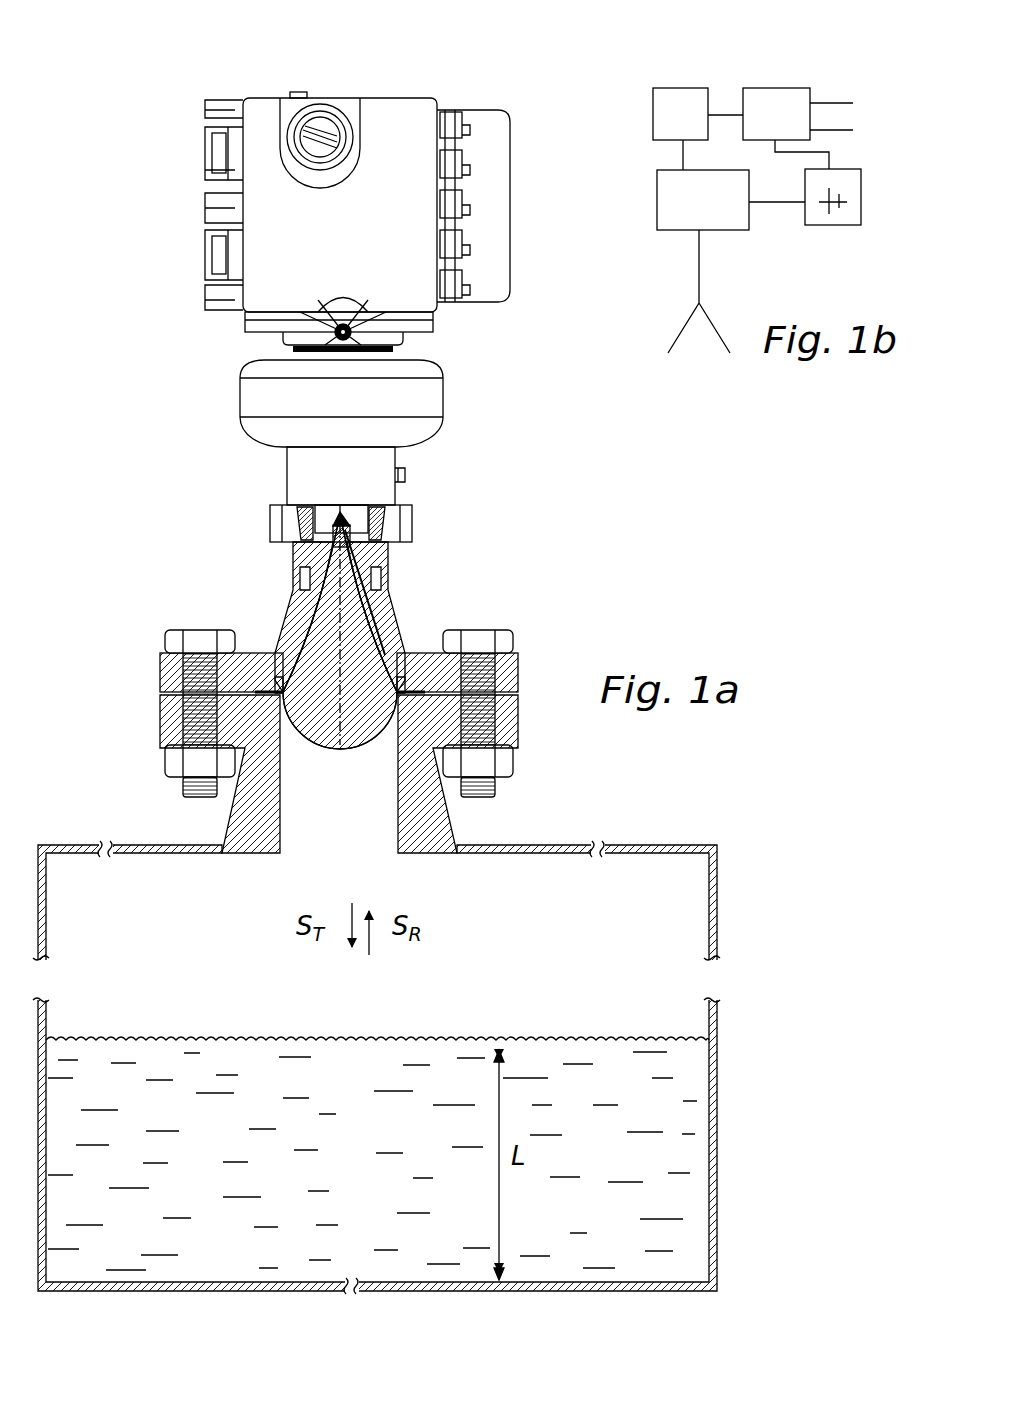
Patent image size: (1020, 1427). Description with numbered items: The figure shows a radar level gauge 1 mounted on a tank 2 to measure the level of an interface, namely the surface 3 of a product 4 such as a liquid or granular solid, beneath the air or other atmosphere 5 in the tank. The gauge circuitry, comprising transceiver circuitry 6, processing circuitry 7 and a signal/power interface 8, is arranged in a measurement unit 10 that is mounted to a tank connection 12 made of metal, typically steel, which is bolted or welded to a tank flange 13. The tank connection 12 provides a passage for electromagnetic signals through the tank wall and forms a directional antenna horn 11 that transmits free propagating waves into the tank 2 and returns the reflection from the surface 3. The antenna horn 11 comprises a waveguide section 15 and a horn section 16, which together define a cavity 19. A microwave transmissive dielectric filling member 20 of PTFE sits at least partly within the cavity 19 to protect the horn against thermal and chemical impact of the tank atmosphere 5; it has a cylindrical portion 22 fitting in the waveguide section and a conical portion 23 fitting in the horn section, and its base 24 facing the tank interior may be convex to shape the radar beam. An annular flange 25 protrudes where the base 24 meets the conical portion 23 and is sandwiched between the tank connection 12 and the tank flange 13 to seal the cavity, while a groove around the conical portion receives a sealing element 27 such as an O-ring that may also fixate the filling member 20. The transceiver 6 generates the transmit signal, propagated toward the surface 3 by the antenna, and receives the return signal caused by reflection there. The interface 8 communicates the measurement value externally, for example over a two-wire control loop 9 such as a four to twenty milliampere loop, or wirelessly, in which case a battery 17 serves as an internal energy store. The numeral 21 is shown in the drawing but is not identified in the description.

In FIG. 1A, the radar level gauge 1 is at (186, 354).
In FIG. 1A, the tank 2 is at (719, 885).
In FIG. 1A, the surface 3 is at (128, 1038).
In FIG. 1A, the product 4 is at (202, 1177).
In FIG. 1A, the atmosphere 5 is at (212, 908).
In FIG. 1B, the transceiver circuitry 6 is at (749, 212).
In FIG. 1B, the processing circuitry 7 is at (680, 90).
In FIG. 1B, the interface 8 is at (773, 88).
In FIG. 1B, the two-wire control loop 9 is at (853, 103).
In FIG. 1A, the measurement unit 10 is at (262, 441).
In FIG. 1A, the antenna horn 11 is at (380, 608).
In FIG. 1B, the antenna horn 11 is at (699, 288).
In FIG. 1A, the tank connection 12 is at (287, 598).
In FIG. 1A, the tank flange 13 is at (455, 832).
In FIG. 1A, the waveguide section 15 is at (307, 547).
In FIG. 1A, the horn section 16 is at (258, 640).
In FIG. 1B, the battery 17 is at (833, 220).
In FIG. 1A, the cavity 19 is at (403, 640).
In FIG. 1A, the dielectric filling member 20 is at (390, 622).
In FIG. 1A, the inner conductor 21 is at (350, 605).
In FIG. 1A, the cylindrical portion 22 is at (350, 530).
In FIG. 1A, the conical portion 23 is at (295, 637).
In FIG. 1A, the base 24 is at (337, 733).
In FIG. 1A, the annular flange 25 is at (417, 690).
In FIG. 1A, the sealing element 27 is at (395, 700).